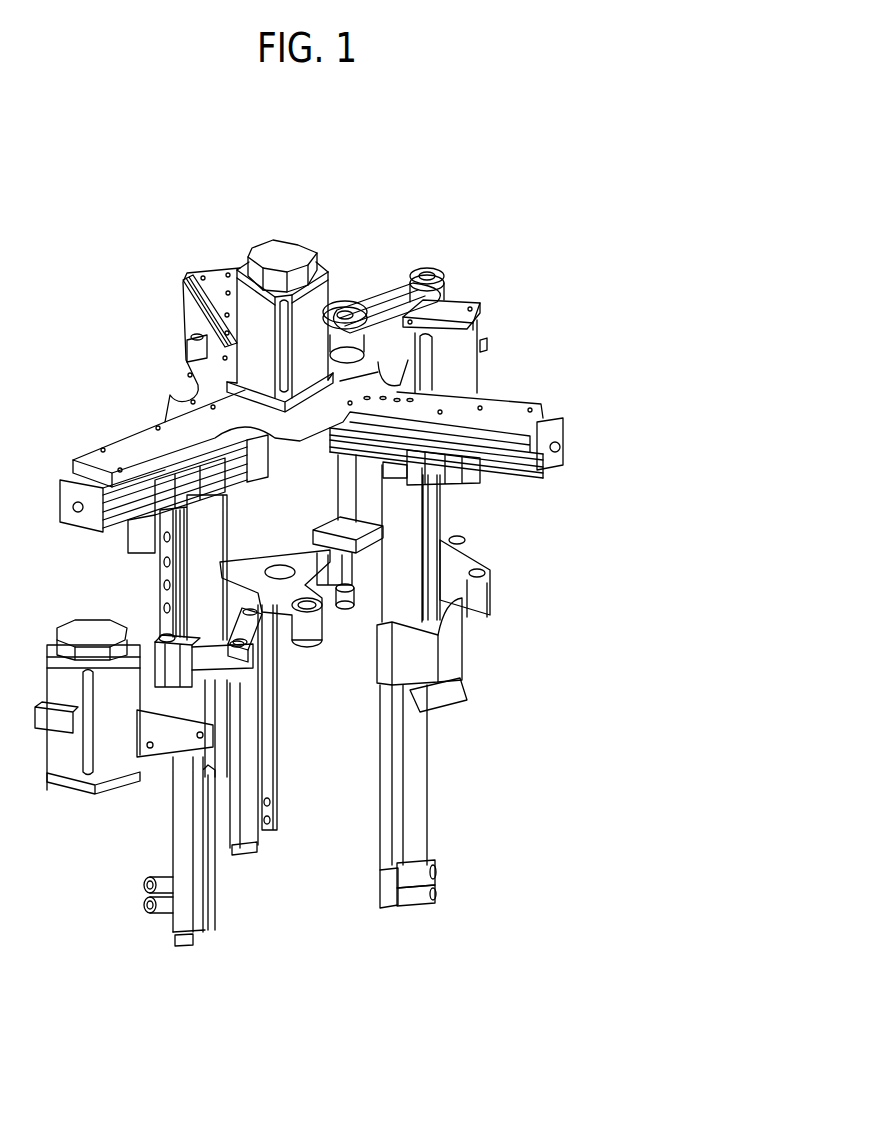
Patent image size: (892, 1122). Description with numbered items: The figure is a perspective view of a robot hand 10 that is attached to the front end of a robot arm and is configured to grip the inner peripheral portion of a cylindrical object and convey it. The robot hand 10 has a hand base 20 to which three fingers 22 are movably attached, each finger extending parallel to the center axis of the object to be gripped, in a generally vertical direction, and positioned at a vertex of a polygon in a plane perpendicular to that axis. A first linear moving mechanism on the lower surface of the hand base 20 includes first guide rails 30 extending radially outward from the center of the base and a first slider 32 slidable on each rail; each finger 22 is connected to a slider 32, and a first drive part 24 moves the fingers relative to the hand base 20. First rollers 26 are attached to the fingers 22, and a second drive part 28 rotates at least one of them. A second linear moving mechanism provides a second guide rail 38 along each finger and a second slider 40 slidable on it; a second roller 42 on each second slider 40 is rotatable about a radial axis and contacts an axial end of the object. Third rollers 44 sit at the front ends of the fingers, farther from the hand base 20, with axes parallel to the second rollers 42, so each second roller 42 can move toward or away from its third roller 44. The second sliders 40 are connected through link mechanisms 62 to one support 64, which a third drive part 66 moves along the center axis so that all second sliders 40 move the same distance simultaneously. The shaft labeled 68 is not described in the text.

The robot hand 10 is at (582, 334).
The hand base 20 is at (118, 458).
The fingers 22 is at (288, 762).
The first drive part 24 is at (320, 297).
The first rollers 26 is at (227, 800).
The second drive part 28 is at (62, 755).
The first guide rails 30 is at (184, 318).
The first slider 32 is at (180, 497).
The second guide rail 38 is at (150, 558).
The second slider 40 is at (147, 645).
The second roller 42 is at (160, 888).
The third roller 44 is at (160, 922).
The link mechanism 62 is at (248, 635).
The support 64 is at (317, 630).
The third drive part 66 is at (462, 378).
The center shaft 68 is at (343, 485).